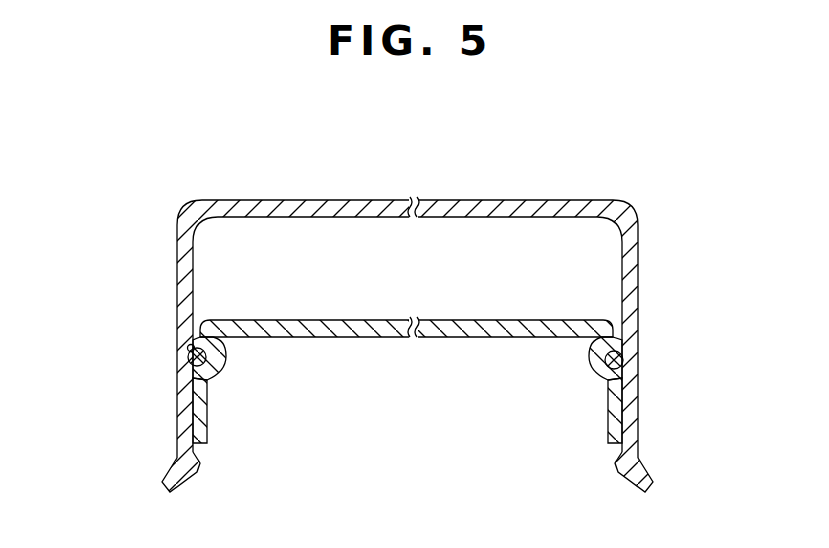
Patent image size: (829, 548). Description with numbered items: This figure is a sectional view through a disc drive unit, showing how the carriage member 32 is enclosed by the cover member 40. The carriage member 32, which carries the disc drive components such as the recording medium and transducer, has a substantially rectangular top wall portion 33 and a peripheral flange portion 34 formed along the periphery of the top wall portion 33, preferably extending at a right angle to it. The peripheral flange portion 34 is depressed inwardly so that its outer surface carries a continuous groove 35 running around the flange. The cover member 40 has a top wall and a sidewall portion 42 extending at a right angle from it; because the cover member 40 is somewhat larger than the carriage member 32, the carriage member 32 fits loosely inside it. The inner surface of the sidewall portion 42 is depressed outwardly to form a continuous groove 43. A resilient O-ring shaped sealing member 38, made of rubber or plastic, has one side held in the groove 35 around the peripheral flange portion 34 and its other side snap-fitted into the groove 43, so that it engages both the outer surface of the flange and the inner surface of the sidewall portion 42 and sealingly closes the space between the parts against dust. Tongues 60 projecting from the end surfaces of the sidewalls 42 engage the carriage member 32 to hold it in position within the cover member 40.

The carriage member 32 is at (403, 385).
The top wall portion 33 is at (306, 340).
The peripheral flange portion 34 is at (204, 403).
The continuous groove 35 is at (183, 380).
The sealing member 38 is at (186, 360).
The cover member 40 is at (415, 305).
The sidewall portion 42 is at (640, 288).
The continuous groove 43 is at (188, 347).
The tongues 60 is at (176, 470).